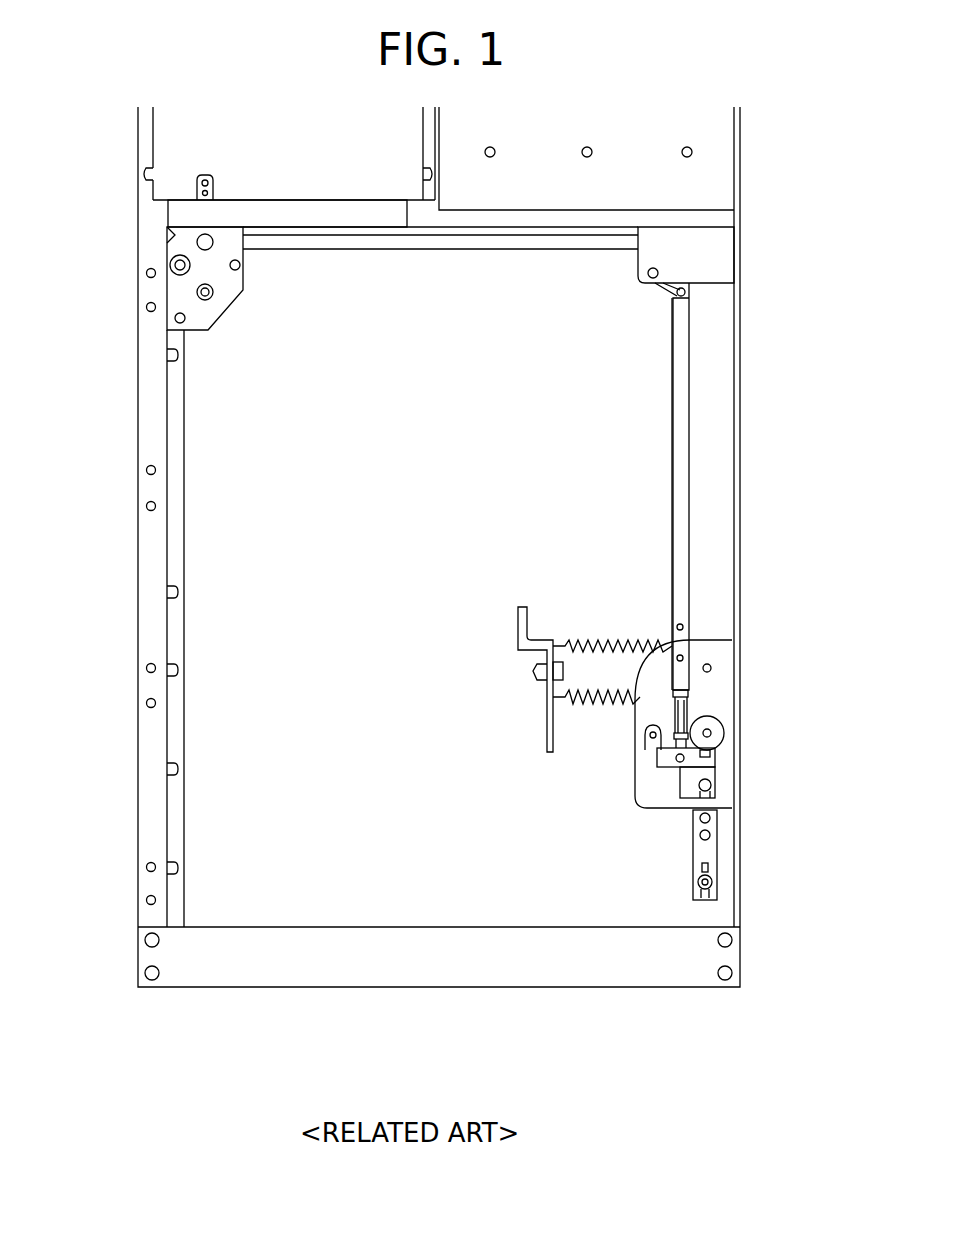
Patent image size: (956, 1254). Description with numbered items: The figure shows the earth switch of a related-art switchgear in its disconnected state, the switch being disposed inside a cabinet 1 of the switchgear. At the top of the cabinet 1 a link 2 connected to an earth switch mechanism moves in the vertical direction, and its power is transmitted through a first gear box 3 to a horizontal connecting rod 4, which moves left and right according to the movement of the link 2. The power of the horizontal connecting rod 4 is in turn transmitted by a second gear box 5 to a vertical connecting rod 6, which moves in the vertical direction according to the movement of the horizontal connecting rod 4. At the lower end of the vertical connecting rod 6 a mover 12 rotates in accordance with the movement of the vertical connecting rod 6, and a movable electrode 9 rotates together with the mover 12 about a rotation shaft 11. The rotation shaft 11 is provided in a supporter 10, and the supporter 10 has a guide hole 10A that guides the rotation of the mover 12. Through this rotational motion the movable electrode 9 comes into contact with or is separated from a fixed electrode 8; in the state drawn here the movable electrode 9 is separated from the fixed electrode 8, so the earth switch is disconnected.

The cabinet 1 is at (126, 242).
The link 2 is at (205, 173).
The first gear box 3 is at (180, 292).
The horizontal connecting rod 4 is at (533, 245).
The second gear box 5 is at (715, 250).
The vertical connecting rod 6 is at (682, 447).
The fixed electrode 8 is at (545, 711).
The movable electrode 9 is at (707, 852).
The supporter 10 is at (645, 788).
The guide hole 10A is at (648, 748).
The rotation shaft 11 is at (712, 719).
The mover 12 is at (680, 780).